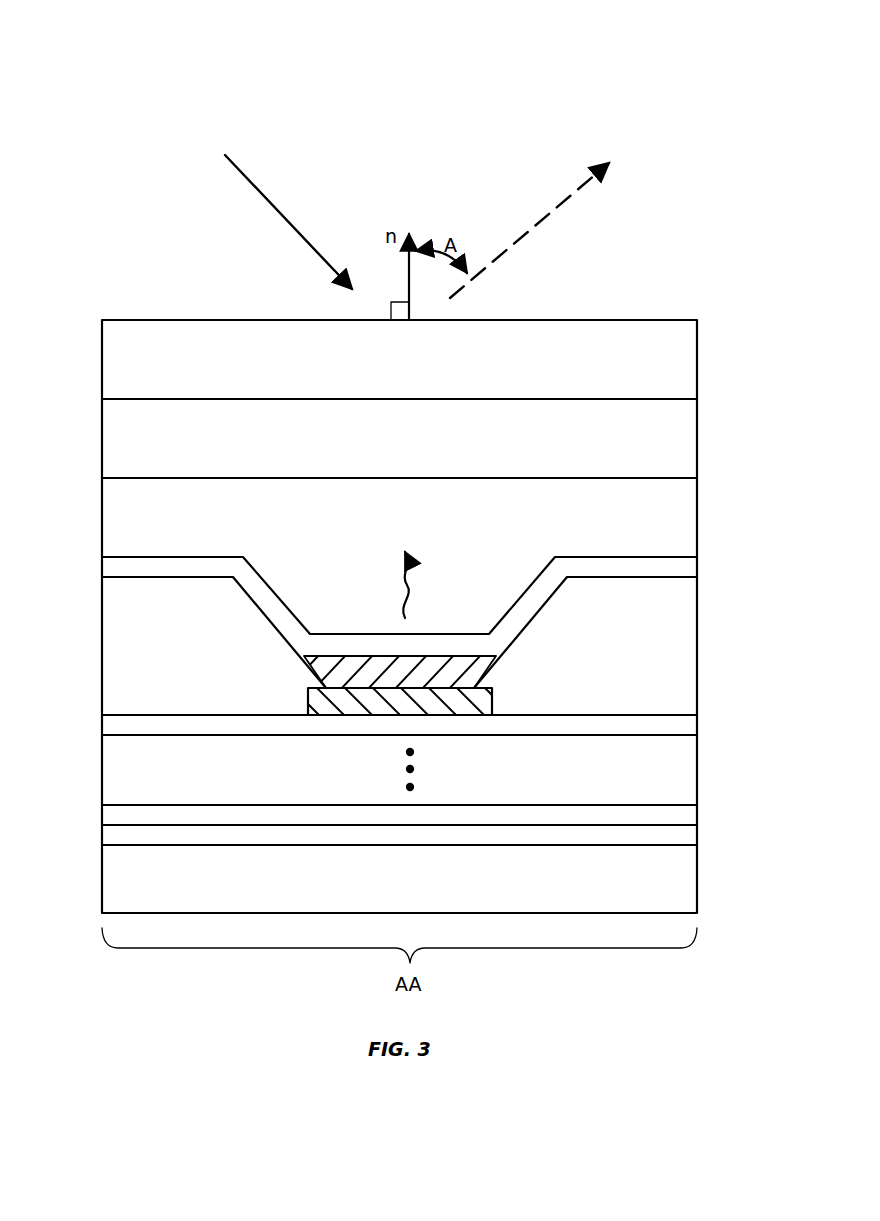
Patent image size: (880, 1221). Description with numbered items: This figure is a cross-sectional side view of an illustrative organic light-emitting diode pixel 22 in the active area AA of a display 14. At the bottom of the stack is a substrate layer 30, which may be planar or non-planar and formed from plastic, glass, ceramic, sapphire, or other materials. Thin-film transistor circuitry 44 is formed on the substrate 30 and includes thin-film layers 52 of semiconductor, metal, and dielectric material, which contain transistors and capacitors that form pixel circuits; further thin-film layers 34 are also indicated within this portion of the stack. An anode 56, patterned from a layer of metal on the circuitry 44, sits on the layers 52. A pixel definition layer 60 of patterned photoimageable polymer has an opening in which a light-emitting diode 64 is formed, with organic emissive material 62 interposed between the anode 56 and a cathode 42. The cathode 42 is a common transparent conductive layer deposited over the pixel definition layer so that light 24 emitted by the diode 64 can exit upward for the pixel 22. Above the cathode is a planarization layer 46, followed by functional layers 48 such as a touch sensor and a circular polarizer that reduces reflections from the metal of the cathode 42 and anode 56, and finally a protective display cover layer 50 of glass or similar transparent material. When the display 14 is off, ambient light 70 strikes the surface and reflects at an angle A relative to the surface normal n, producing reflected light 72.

The display 14 is at (138, 82).
The pixel 22 is at (82, 508).
The light 24 is at (408, 585).
The substrate layer 30 is at (688, 882).
The thin-film layers 34 is at (688, 728).
The cathode 42 is at (687, 569).
The thin-film transistor circuitry 44 is at (88, 558).
The planarization layer 46 is at (687, 520).
The functional layers 48 is at (687, 439).
The display cover layer 50 is at (687, 365).
The thin-film layers 52 is at (711, 717).
The anode 56 is at (483, 703).
The pixel definition layer 60 is at (687, 640).
The organic emissive material 62 is at (325, 670).
The light-emitting diode 64 is at (503, 571).
The ambient light 70 is at (280, 210).
The reflected light 72 is at (547, 212).